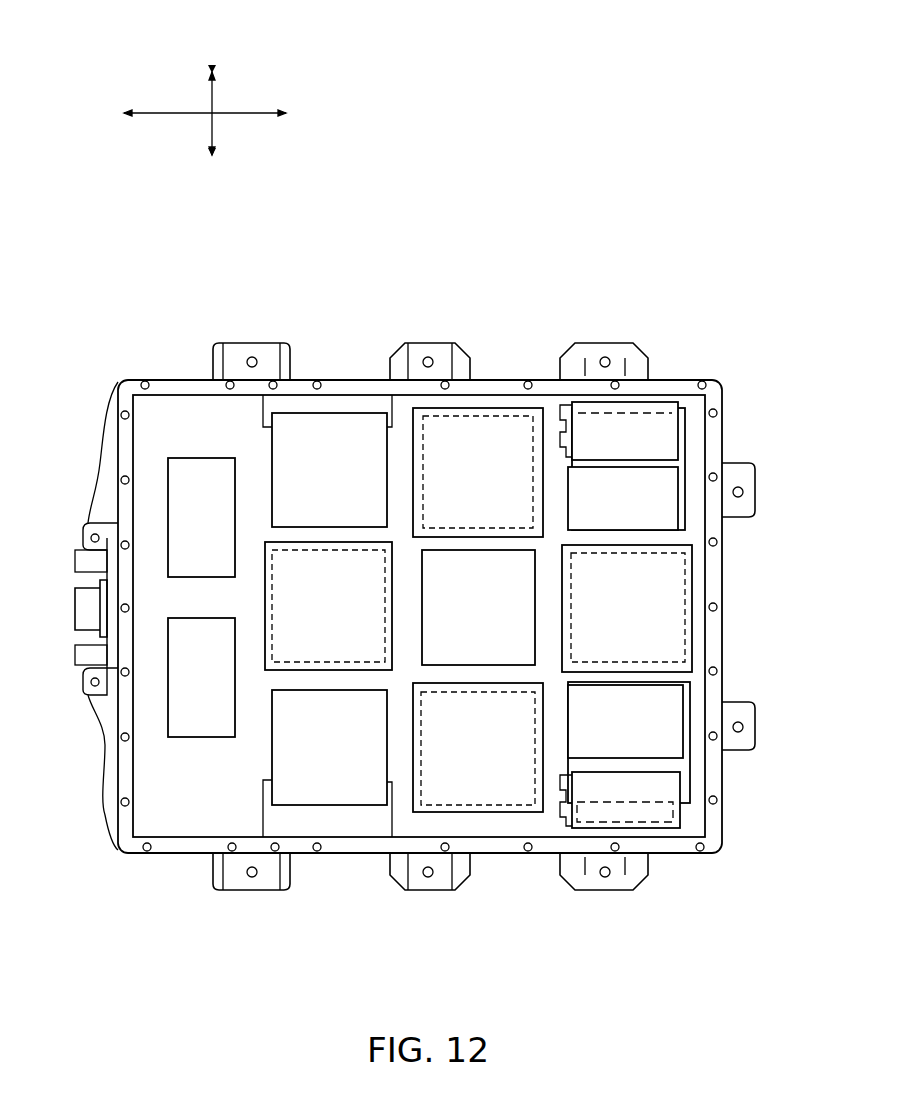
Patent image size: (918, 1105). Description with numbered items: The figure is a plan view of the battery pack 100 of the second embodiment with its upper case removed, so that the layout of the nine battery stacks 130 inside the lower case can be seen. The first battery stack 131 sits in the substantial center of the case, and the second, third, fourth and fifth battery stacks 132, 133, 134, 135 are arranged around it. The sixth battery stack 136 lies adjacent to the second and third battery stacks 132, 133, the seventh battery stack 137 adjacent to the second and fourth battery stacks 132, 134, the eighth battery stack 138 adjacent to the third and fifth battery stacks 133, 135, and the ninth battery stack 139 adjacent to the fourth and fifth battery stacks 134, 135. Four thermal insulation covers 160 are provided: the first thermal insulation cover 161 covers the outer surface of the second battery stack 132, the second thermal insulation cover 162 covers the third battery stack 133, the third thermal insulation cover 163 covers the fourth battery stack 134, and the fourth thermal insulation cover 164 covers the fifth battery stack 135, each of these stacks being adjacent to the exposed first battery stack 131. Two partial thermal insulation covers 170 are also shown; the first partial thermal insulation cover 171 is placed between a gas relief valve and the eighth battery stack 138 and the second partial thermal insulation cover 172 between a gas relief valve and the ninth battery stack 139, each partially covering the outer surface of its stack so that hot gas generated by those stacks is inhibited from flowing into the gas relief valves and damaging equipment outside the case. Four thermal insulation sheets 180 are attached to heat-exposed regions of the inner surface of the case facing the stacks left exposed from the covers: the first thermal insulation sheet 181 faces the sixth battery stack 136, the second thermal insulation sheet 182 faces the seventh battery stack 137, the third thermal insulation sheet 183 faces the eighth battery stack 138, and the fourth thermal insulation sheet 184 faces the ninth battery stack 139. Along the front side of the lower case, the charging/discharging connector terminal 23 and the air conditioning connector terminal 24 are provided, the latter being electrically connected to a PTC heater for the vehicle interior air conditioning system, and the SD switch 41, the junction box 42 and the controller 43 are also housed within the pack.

The battery pack 100 is at (107, 30).
The battery stacks 130 is at (267, 440).
The thermal insulation covers 160 is at (263, 536).
The thermal insulation sheets 180 is at (338, 400).
The first thermal insulation sheet 181 is at (363, 407).
The second thermal insulation sheet 182 is at (333, 827).
The third thermal insulation sheet 183 is at (695, 437).
The fourth thermal insulation sheet 184 is at (695, 772).
The first battery stack 131 is at (438, 652).
The second battery stack 132 is at (288, 667).
The third battery stack 133 is at (508, 410).
The fourth battery stack 134 is at (530, 812).
The fifth battery stack 135 is at (688, 625).
The sixth battery stack 136 is at (300, 420).
The seventh battery stack 137 is at (290, 790).
The eighth battery stack 138 is at (660, 498).
The ninth battery stack 139 is at (663, 708).
The first thermal insulation cover 161 is at (265, 660).
The second thermal insulation cover 162 is at (433, 410).
The third thermal insulation cover 163 is at (528, 810).
The fourth thermal insulation cover 164 is at (690, 578).
The partial thermal insulation covers 170 is at (577, 395).
The first partial thermal insulation cover 171 is at (655, 402).
The second partial thermal insulation cover 172 is at (660, 830).
The SD switch 41 is at (170, 528).
The junction box 42 is at (173, 720).
The controller 43 is at (680, 820).
The charging/discharging connector terminal 23 is at (75, 605).
The air conditioning connector terminal 24 is at (75, 655).